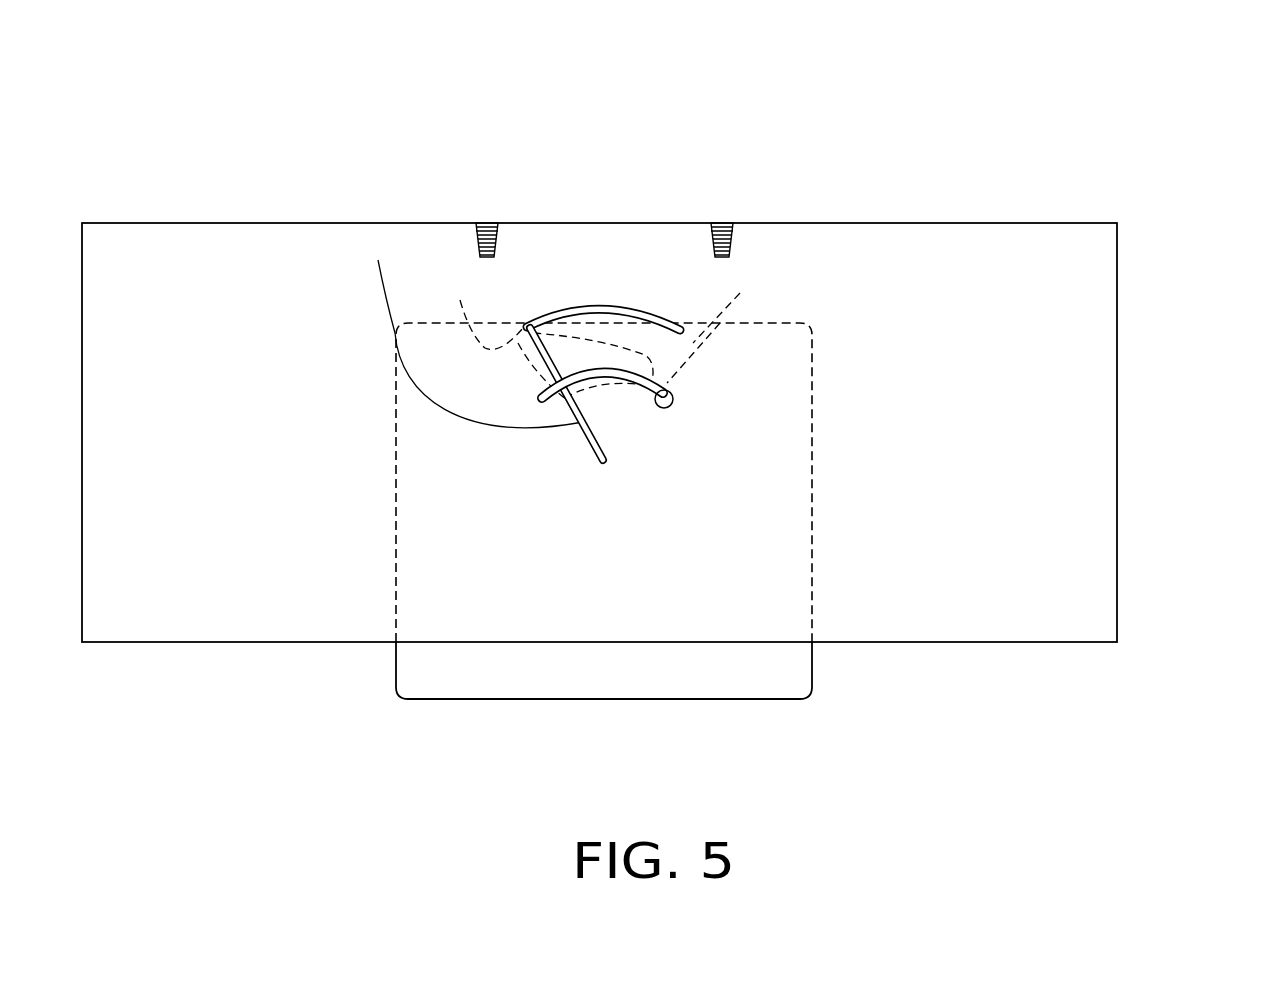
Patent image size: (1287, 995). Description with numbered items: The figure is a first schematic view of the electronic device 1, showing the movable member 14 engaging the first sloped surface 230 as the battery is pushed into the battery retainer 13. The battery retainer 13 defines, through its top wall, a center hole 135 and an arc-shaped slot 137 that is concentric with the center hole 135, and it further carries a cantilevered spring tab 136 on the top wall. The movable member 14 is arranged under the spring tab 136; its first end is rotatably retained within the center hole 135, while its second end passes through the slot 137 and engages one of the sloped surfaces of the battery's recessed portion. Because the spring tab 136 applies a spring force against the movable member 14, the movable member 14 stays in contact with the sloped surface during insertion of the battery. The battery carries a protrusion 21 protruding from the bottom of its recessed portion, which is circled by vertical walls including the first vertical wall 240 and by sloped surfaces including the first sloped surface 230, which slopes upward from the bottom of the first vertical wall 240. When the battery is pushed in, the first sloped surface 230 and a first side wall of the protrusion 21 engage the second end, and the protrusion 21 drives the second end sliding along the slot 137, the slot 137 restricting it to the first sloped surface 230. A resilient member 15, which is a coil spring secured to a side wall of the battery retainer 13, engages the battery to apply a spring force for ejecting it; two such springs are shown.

The electronic device 1 is at (935, 123).
The battery retainer 13 is at (772, 562).
The movable member 14 is at (378, 260).
The resilient member 15 is at (713, 223).
The protrusion 21 is at (567, 357).
The center hole 135 is at (606, 462).
The spring tab 136 is at (672, 404).
The slot 137 is at (602, 307).
The first sloped surface 230 is at (740, 293).
The first vertical wall 240 is at (460, 300).